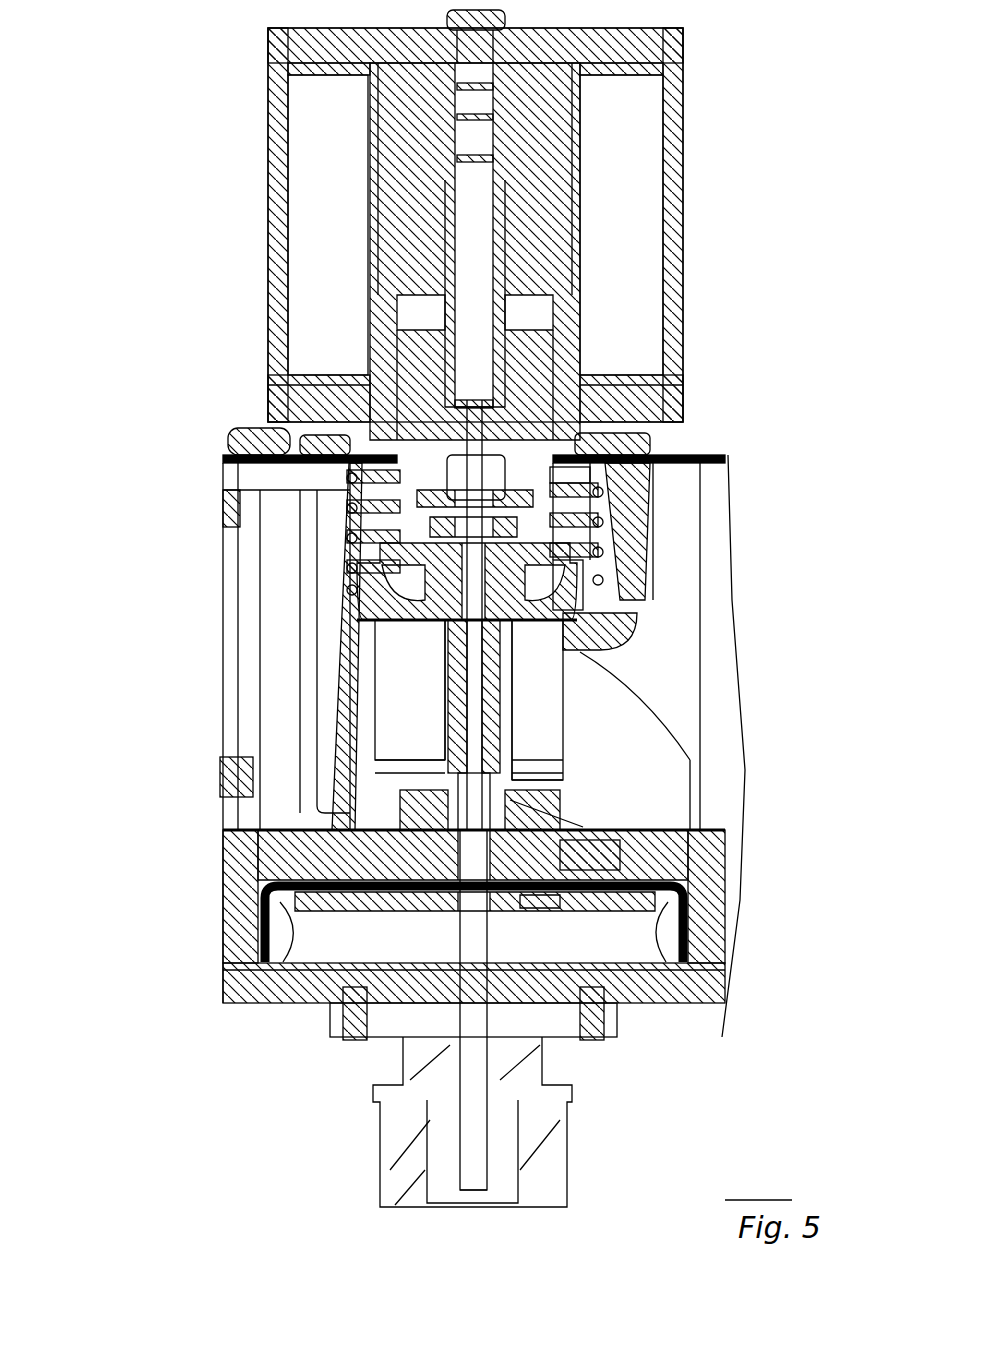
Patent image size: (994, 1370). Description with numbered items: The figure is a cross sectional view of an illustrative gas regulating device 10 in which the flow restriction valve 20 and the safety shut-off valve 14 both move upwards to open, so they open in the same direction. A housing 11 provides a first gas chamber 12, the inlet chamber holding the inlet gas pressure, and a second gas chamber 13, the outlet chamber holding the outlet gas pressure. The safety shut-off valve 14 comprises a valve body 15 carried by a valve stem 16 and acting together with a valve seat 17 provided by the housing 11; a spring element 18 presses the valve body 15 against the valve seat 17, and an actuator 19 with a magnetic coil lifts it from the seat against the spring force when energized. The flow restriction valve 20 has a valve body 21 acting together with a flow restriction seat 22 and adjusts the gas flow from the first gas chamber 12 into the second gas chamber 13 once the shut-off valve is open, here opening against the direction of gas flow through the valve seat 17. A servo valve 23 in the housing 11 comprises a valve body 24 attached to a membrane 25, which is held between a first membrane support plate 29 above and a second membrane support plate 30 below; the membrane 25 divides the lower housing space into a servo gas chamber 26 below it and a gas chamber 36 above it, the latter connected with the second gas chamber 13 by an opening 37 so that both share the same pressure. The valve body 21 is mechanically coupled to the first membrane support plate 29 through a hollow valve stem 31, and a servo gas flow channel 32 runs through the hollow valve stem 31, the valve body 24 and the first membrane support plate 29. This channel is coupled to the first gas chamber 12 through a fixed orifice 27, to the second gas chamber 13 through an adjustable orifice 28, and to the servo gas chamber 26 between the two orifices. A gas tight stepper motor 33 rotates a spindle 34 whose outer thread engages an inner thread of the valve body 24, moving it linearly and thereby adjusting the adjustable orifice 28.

The gas regulating device 10 is at (746, 122).
The housing 11 is at (228, 438).
The first gas chamber 12 is at (270, 630).
The second gas chamber 13 is at (704, 668).
The safety shut-off valve 14 is at (802, 374).
The valve body 15 is at (583, 570).
The valve stem 16 is at (515, 390).
The valve seat 17 is at (355, 610).
The spring element 18 is at (598, 485).
The actuator 19 is at (636, 180).
The flow restriction valve 20 is at (443, 668).
The valve body 21 is at (595, 612).
The flow restriction seat 22 is at (600, 690).
The servo valve 23 is at (345, 990).
The valve body 24 is at (548, 908).
The membrane 25 is at (683, 868).
The servo gas chamber 26 is at (655, 935).
The fixed orifice 27 is at (360, 488).
The adjustable orifice 28 is at (600, 865).
The first membrane support plate 29 is at (575, 870).
The second membrane support plate 30 is at (390, 922).
The hollow valve stem 31 is at (420, 745).
The servo gas flow channel 32 is at (470, 697).
The stepper motor 33 is at (545, 1162).
The spindle 34 is at (460, 935).
The gas chamber 36 is at (590, 880).
The opening 37 is at (548, 835).